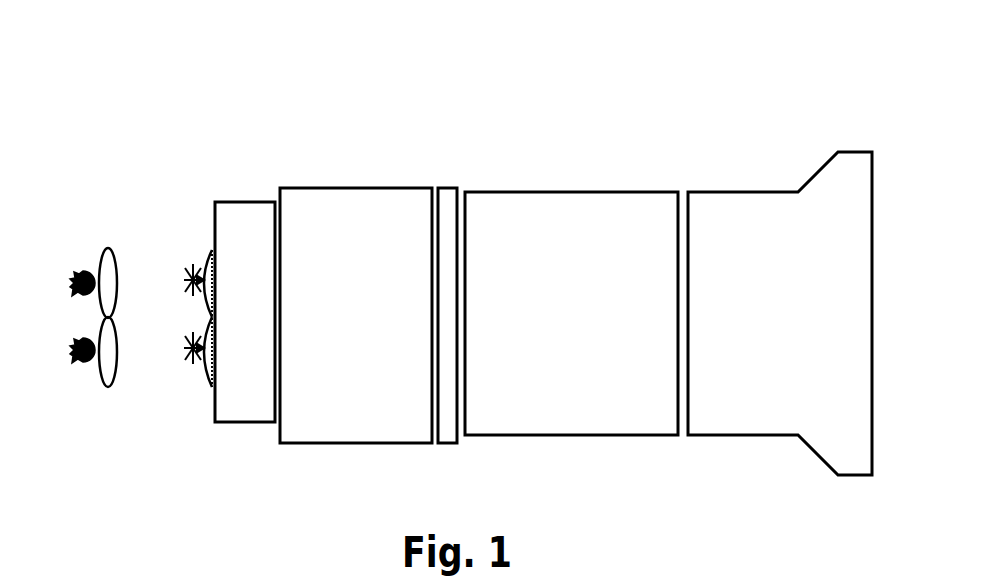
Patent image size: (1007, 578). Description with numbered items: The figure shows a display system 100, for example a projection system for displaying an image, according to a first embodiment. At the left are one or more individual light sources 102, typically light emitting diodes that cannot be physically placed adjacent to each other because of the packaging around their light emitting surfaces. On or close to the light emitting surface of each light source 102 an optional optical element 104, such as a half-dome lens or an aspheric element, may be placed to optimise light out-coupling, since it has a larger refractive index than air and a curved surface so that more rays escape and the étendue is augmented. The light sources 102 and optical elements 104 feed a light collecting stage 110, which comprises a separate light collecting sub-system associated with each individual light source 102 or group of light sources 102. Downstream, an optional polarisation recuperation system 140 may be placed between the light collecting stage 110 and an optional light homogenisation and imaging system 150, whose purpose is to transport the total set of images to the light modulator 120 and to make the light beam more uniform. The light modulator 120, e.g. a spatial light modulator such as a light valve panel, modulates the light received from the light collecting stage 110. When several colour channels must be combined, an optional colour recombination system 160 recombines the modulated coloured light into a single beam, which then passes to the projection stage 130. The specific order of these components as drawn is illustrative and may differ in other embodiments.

The display system 100 is at (128, 66).
The individual light source 102 is at (72, 357).
The optical element 104 is at (83, 272).
The light collecting stage 110 is at (95, 192).
The light modulator 120 is at (447, 166).
The projection stage 130 is at (873, 110).
The polarisation recuperation system 140 is at (213, 110).
The light homogenisation and imaging system 150 is at (432, 110).
The colour recombination system 160 is at (672, 110).